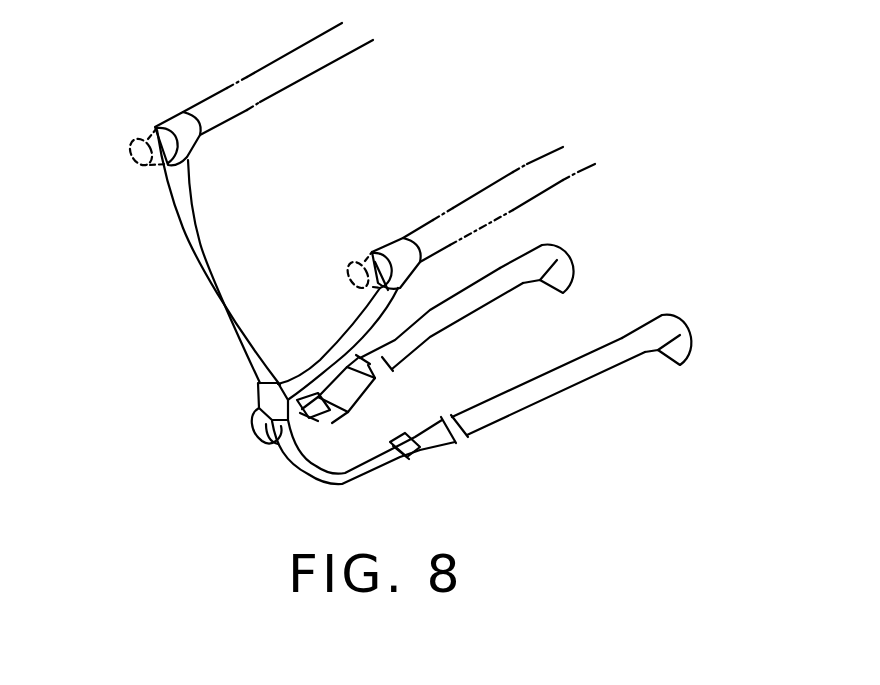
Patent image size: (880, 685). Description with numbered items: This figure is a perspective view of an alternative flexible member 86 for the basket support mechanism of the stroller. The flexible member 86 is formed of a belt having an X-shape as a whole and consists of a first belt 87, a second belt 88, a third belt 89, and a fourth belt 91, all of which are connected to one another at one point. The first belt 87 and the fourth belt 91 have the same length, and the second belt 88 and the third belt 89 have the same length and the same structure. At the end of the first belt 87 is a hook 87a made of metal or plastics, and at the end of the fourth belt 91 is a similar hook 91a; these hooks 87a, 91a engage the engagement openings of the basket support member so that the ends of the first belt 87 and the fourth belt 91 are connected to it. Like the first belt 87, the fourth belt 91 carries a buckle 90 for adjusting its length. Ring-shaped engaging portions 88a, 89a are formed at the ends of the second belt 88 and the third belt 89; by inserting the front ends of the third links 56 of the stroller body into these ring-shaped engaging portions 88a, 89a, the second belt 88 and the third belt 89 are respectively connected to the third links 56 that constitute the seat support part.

The third link 56 is at (135, 160).
The flexible member 86 is at (203, 409).
The first belt 87 is at (452, 323).
The hook 87a is at (550, 253).
The second belt 88 is at (215, 307).
The ring-shaped engaging portion 88a is at (175, 120).
The third belt 89 is at (347, 340).
The ring-shaped engaging portion 89a is at (400, 250).
The buckle 90 is at (328, 402).
The fourth belt 91 is at (513, 415).
The hook 91a is at (670, 323).